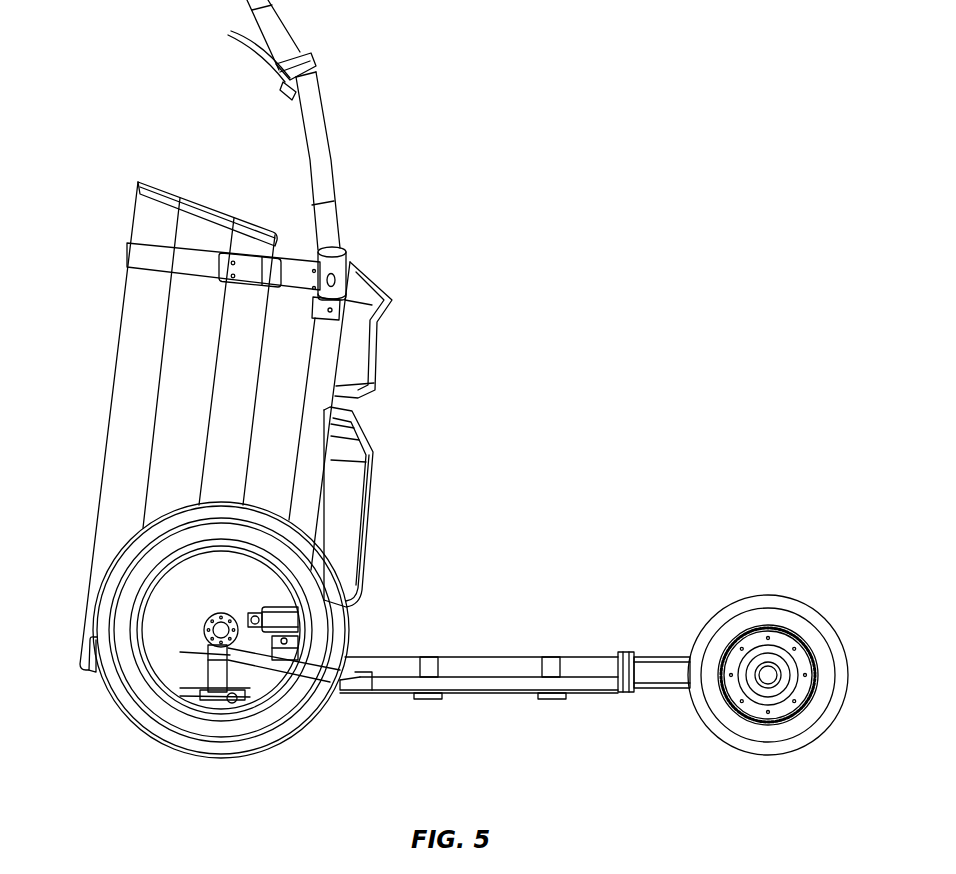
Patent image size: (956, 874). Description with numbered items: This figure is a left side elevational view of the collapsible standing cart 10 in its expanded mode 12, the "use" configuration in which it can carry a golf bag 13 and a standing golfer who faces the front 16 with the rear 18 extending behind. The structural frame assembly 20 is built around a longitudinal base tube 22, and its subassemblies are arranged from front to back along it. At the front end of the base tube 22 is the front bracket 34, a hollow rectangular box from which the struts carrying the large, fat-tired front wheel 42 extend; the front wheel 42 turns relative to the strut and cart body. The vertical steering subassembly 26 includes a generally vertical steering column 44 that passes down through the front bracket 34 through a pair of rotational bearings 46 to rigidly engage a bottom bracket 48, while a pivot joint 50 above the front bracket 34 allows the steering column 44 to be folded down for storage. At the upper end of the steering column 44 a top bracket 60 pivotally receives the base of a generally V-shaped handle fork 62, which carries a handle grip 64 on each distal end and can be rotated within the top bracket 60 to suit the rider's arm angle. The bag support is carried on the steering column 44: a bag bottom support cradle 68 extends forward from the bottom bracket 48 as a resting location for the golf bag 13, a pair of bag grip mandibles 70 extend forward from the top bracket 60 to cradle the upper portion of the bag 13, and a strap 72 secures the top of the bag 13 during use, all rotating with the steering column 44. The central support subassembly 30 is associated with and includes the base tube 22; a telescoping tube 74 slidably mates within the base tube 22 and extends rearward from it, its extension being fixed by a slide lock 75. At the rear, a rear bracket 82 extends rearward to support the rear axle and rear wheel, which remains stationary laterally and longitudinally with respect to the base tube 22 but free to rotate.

The collapsible standing cart 10 is at (504, 182).
The expanded mode 12 is at (601, 460).
The golf bag 13 is at (203, 393).
The front 16 is at (67, 627).
The rear 18 is at (860, 660).
The structural frame assembly 20 is at (379, 442).
The longitudinal base tube 22 is at (466, 662).
The vertical steering subassembly 26 is at (387, 166).
The central support subassembly 30 is at (499, 727).
The front bracket 34 is at (259, 674).
The front wheel 42 is at (173, 720).
The steering column 44 is at (317, 400).
The rotational bearings 46 is at (283, 650).
The bottom bracket 48 is at (199, 688).
The pivot joint 50 is at (290, 623).
The top bracket 60 is at (344, 256).
The handle fork 62 is at (320, 163).
The handle grip 64 is at (287, 38).
The bag bottom support cradle 68 is at (92, 672).
The bag grip mandibles 70 is at (243, 272).
The strap 72 is at (128, 258).
The telescoping tube 74 is at (659, 663).
The slide lock 75 is at (628, 653).
The rear bracket 82 is at (793, 623).